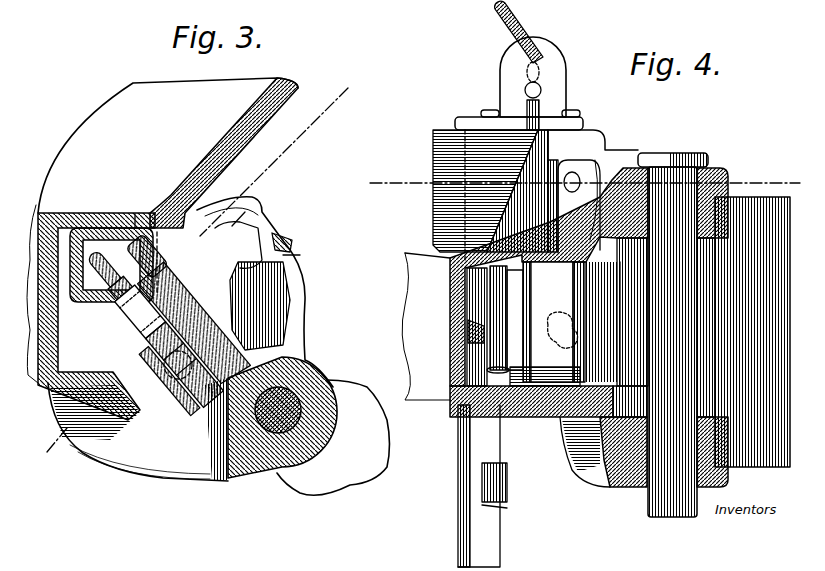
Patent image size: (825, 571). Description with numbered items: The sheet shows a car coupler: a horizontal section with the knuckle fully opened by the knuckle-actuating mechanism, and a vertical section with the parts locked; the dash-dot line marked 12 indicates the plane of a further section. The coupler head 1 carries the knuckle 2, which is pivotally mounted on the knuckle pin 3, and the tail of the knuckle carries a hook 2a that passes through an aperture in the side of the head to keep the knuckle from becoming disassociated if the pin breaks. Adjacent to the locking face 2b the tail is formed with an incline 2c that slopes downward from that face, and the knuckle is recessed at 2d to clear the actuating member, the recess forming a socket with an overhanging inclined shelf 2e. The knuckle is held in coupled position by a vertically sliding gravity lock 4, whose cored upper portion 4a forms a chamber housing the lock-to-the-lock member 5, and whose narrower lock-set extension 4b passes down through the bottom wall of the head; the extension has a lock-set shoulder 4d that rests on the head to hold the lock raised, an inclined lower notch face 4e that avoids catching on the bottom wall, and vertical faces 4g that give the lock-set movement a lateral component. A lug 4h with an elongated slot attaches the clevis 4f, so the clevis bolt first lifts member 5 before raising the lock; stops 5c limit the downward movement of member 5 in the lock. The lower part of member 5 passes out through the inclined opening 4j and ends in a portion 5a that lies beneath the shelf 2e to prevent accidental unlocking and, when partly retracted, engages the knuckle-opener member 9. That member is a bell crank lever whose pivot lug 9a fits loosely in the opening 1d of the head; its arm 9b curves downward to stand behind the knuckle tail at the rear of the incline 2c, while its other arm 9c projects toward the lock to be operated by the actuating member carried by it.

In FIG. 3, the coupler head 1 is at (95, 116).
In FIG. 4, the coupler head 1 is at (608, 488).
In FIG. 3, the opening in the coupler head 1d is at (146, 381).
In FIG. 3, the knuckle 2 is at (354, 498).
In FIG. 4, the knuckle 2 is at (756, 480).
In FIG. 4, the hook 2a is at (540, 406).
In FIG. 3, the locking face 2b is at (260, 226).
In FIG. 3, the incline 2c is at (205, 214).
In FIG. 4, the incline 2c is at (476, 322).
In FIG. 3, the recess 2d is at (286, 243).
In FIG. 3, the overhanging inclined shelf 2e is at (300, 255).
In FIG. 3, the knuckle pin 3 is at (310, 372).
In FIG. 4, the knuckle pin 3 is at (646, 510).
In FIG. 3, the gravity lock 4 is at (108, 229).
In FIG. 4, the gravity lock 4 is at (454, 120).
In FIG. 3, the upper portion of the lock 4a is at (91, 290).
In FIG. 4, the upper portion of the lock 4a is at (470, 283).
In FIG. 4, the lock-set extension 4b is at (478, 545).
In FIG. 4, the lock-set shoulder 4d is at (507, 470).
In FIG. 4, the lower face of the lock-set notch 4e is at (508, 505).
In FIG. 4, the clevis 4f is at (503, 14).
In FIG. 4, the vertical faces 4g is at (460, 480).
In FIG. 4, the lug 4h is at (562, 50).
In FIG. 3, the inclined opening 4j is at (135, 229).
In FIG. 3, the lock-to-the-lock member 5 is at (92, 236).
In FIG. 3, the lower end portion of member 5 5a is at (124, 300).
In FIG. 4, the stops 5c is at (595, 112).
In FIG. 3, the knuckle-opener member 9 is at (126, 346).
In FIG. 4, the knuckle-opener member 9 is at (490, 280).
In FIG. 3, the pivot lug 9a is at (171, 380).
In FIG. 4, the pivot lug 9a is at (576, 181).
In FIG. 3, the knuckle-engaging arm 9b is at (234, 226).
In FIG. 4, the knuckle-engaging arm 9b is at (490, 350).
In FIG. 3, the lock-side arm 9c is at (120, 330).
In FIG. 3, the axis line 12 is at (197, 275).